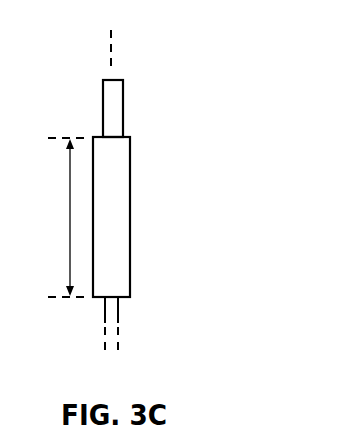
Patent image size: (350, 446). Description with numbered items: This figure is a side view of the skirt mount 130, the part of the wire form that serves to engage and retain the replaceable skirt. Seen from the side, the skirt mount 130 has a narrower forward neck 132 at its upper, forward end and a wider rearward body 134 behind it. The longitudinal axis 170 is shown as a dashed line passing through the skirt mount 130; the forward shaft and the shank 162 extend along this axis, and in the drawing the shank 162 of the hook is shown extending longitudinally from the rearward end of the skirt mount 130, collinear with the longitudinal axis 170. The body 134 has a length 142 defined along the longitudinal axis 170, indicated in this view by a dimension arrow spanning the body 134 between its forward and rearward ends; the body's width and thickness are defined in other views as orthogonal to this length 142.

The longitudinal axis 170 is at (109, 50).
The forward neck 132 is at (102, 117).
The rearward body 134 is at (130, 255).
The skirt mount 130 is at (137, 157).
The length 142 is at (70, 228).
The shank 162 is at (104, 315).